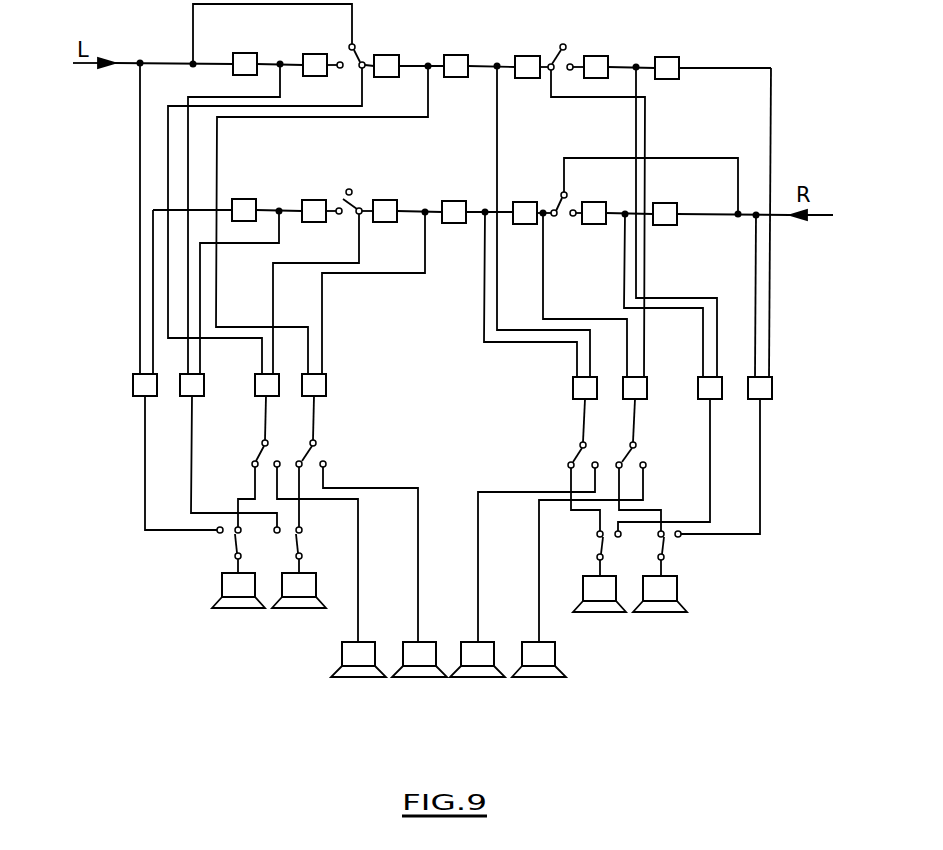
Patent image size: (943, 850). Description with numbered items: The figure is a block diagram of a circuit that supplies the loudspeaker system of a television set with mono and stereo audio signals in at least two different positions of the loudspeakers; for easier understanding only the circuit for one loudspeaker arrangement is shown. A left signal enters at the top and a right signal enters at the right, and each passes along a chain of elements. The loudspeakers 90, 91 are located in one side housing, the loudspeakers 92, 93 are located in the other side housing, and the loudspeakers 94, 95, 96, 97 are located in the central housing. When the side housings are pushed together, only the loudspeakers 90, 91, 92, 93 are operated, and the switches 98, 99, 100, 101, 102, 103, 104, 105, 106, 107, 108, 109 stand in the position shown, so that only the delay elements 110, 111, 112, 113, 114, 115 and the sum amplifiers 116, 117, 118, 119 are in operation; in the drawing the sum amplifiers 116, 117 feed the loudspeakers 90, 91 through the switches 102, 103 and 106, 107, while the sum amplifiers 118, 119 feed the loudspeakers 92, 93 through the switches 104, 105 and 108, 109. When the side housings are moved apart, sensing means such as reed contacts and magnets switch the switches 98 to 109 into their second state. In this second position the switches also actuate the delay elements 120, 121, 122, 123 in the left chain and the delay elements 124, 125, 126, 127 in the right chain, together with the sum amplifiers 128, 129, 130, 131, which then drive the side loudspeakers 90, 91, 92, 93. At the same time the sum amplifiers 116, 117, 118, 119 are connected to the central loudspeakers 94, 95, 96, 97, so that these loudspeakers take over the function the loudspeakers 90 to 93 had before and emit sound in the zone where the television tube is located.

The loudspeaker 90 is at (238, 609).
The loudspeaker 91 is at (299, 609).
The loudspeaker 92 is at (599, 614).
The loudspeaker 93 is at (660, 614).
The loudspeaker 94 is at (358, 678).
The loudspeaker 95 is at (418, 678).
The loudspeaker 96 is at (477, 678).
The loudspeaker 97 is at (538, 678).
The switch 98 is at (356, 44).
The switch 99 is at (557, 45).
The switch 100 is at (355, 192).
The switch 101 is at (559, 203).
The switch 102 is at (259, 455).
The switch 103 is at (318, 456).
The switch 104 is at (574, 455).
The switch 105 is at (634, 455).
The switch 106 is at (232, 543).
The switch 107 is at (302, 547).
The switch 108 is at (598, 549).
The switch 109 is at (668, 545).
The delay element 110 is at (388, 55).
The delay element 111 is at (458, 55).
The delay element 112 is at (526, 56).
The delay element 113 is at (387, 200).
The delay element 114 is at (455, 201).
The delay element 115 is at (522, 202).
The sum amplifier 116 is at (255, 390).
The sum amplifier 117 is at (326, 386).
The sum amplifier 118 is at (573, 386).
The sum amplifier 119 is at (647, 390).
The delay element 120 is at (245, 52).
The delay element 121 is at (315, 53).
The delay element 122 is at (598, 56).
The delay element 123 is at (667, 57).
The delay element 124 is at (243, 199).
The delay element 125 is at (314, 200).
The delay element 126 is at (594, 202).
The delay element 127 is at (670, 203).
The sum amplifier 128 is at (133, 390).
The sum amplifier 129 is at (180, 390).
The sum amplifier 130 is at (713, 399).
The sum amplifier 131 is at (772, 388).